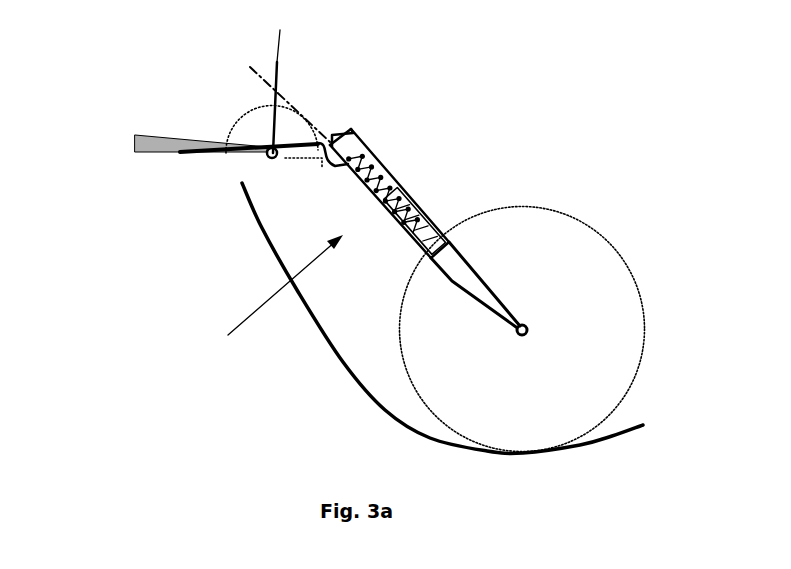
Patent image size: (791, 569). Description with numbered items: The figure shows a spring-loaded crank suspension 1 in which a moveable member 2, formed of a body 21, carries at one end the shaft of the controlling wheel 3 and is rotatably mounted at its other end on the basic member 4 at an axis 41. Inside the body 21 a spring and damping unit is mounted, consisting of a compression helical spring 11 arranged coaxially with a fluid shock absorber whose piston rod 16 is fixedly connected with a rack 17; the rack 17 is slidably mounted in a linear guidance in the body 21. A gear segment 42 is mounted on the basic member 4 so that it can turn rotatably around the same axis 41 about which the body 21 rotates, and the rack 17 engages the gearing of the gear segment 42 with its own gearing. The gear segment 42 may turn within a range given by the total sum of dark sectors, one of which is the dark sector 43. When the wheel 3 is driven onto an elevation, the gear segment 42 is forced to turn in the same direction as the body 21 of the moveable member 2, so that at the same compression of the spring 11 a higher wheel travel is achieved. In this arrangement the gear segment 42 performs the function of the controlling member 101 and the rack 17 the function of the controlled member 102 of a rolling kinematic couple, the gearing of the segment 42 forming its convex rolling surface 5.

The spring-loaded crank suspension 1 is at (269, 308).
The moveable member 2 is at (433, 200).
The controlling wheel 3 is at (562, 273).
The basic member 4 is at (279, 78).
The convex rolling surface 5 is at (227, 137).
The compression helical spring 11 is at (403, 183).
The piston rod 16 is at (380, 150).
The rack 17 is at (325, 90).
The body 21 is at (490, 191).
The axis 41 is at (280, 152).
The gear segment 42 is at (235, 86).
The dark sector 43 is at (148, 145).
The controlling member 101 is at (250, 133).
The controlled member 102 is at (290, 107).